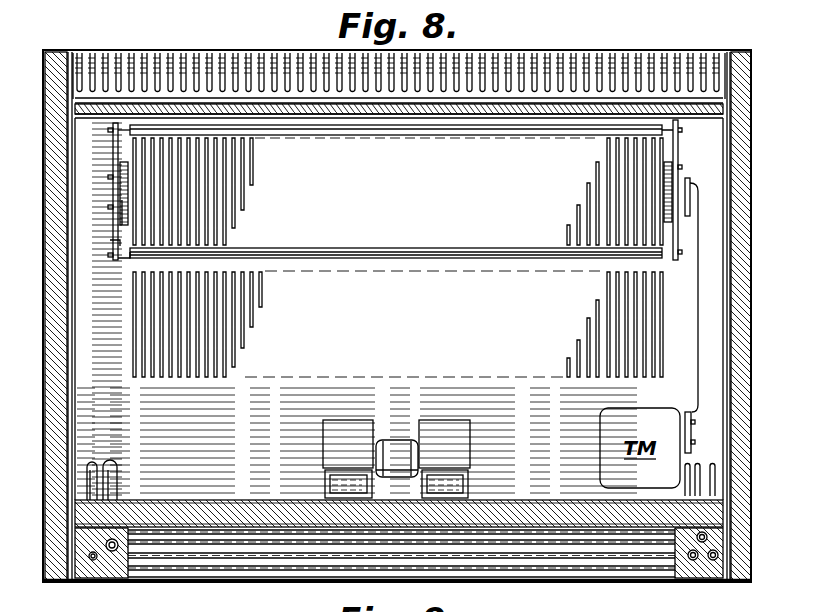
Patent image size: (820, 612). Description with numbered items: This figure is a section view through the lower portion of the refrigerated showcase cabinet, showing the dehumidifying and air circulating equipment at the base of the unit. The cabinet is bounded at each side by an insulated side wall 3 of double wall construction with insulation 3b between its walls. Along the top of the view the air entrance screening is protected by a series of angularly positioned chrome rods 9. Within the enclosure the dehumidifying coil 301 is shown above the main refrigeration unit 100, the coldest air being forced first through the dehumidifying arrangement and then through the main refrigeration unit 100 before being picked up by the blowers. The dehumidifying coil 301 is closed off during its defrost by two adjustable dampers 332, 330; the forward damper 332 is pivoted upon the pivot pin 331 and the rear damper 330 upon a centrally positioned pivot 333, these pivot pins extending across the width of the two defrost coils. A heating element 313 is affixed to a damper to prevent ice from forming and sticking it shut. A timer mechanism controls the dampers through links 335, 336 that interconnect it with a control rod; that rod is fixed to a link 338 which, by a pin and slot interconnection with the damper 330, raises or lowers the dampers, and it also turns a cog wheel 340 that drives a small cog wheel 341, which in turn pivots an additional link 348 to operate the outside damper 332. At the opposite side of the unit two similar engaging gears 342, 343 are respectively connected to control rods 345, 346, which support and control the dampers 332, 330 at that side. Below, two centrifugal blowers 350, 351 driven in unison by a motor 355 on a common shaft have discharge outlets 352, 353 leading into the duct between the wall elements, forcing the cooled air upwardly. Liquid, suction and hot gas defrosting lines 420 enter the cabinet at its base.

The insulated side wall 3 is at (45, 318).
The insulation 3b is at (50, 386).
The chrome rods 9 is at (533, 60).
The main refrigeration unit 100 is at (423, 332).
The dehumidifying coil 301 is at (427, 197).
The heating element 313 is at (388, 259).
The adjustable damper 330 is at (470, 259).
The pivot pin 331 is at (125, 124).
The adjustable damper 332 is at (498, 136).
The pivot 333 is at (123, 262).
The link 335 is at (690, 437).
The link 336 is at (697, 393).
The link 338 is at (690, 227).
The cog wheel 340 is at (670, 218).
The small cog wheel 341 is at (672, 165).
The engaging gear 342 is at (120, 170).
The engaging gear 343 is at (118, 225).
The control rod 345 is at (118, 133).
The control rod 346 is at (113, 243).
The link 348 is at (678, 147).
The centrifugal blower 350 is at (470, 450).
The centrifugal blower 351 is at (327, 448).
The discharge outlet 352 is at (473, 480).
The discharge outlet 353 is at (327, 478).
The motor 355 is at (390, 443).
The refrigerant lines 420 is at (93, 562).